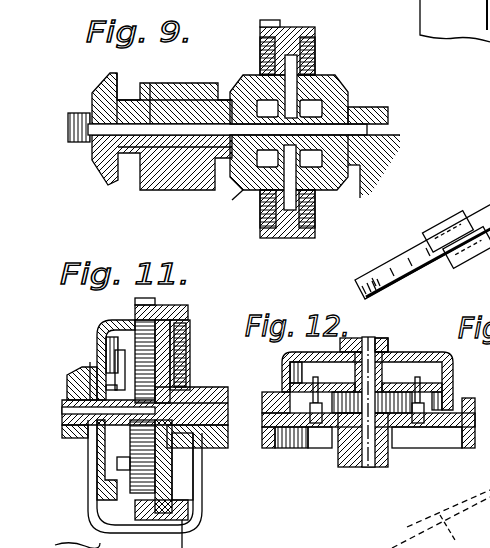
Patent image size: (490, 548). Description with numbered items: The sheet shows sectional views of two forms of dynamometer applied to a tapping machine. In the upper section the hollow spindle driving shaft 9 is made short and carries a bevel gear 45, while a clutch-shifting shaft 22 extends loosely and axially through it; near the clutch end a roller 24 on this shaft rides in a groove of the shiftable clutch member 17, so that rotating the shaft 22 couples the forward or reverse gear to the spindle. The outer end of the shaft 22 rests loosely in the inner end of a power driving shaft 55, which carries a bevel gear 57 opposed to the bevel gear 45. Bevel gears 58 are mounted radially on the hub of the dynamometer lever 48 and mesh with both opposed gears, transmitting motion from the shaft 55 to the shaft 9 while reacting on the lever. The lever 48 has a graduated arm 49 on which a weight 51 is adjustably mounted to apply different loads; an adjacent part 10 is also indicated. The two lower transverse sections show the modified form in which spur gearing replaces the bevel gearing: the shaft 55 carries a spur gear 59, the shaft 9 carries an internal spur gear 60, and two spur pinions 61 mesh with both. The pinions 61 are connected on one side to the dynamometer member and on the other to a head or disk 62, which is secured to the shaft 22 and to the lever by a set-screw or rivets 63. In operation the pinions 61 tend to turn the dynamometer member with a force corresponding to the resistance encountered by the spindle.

In FIG. 9, the driving shaft 9 is at (190, 122).
In FIG. 11, the driving shaft 9 is at (77, 371).
In FIG. 12, the driving shaft 9 is at (378, 350).
In FIG. 9, the housing cap 10 is at (119, 75).
In FIG. 9, the clutch member 17 is at (90, 138).
In FIG. 9, the clutch-shifting shaft 22 is at (343, 120).
In FIG. 11, the clutch-shifting shaft 22 is at (80, 414).
In FIG. 12, the clutch-shifting shaft 22 is at (393, 350).
In FIG. 9, the roller 24 is at (80, 113).
In FIG. 9, the bevel gear 45 is at (245, 186).
In FIG. 9, the dynamometer lever 48 is at (286, 240).
In FIG. 11, the dynamometer lever 48 is at (166, 306).
In FIG. 9, the graduated arm 49 is at (380, 276).
In FIG. 9, the weight 51 is at (445, 220).
In FIG. 9, the driving shaft 55 is at (390, 124).
In FIG. 11, the driving shaft 55 is at (210, 395).
In FIG. 12, the driving shaft 55 is at (385, 458).
In FIG. 9, the bevel gear 57 is at (340, 90).
In FIG. 9, the bevel gears 58 is at (306, 76).
In FIG. 11, the spur gear 59 is at (158, 385).
In FIG. 12, the spur gear 59 is at (335, 412).
In FIG. 11, the internal spur gear 60 is at (140, 324).
In FIG. 12, the internal spur gear 60 is at (298, 408).
In FIG. 11, the spur pinions 61 is at (186, 336).
In FIG. 11, the head or disk 62 is at (122, 440).
In FIG. 12, the head or disk 62 is at (392, 380).
In FIG. 11, the set-screw 63 is at (100, 348).
In FIG. 12, the set-screw 63 is at (436, 382).